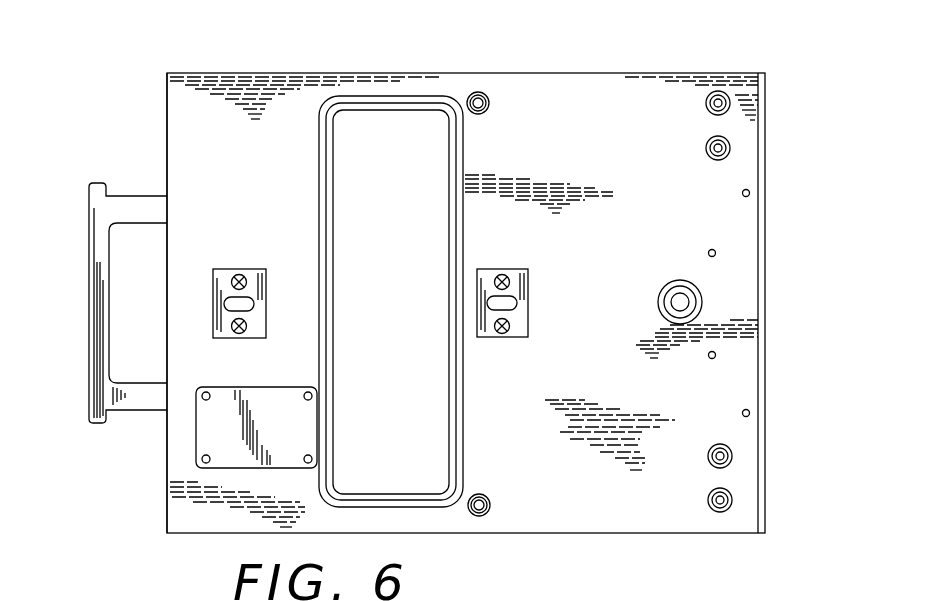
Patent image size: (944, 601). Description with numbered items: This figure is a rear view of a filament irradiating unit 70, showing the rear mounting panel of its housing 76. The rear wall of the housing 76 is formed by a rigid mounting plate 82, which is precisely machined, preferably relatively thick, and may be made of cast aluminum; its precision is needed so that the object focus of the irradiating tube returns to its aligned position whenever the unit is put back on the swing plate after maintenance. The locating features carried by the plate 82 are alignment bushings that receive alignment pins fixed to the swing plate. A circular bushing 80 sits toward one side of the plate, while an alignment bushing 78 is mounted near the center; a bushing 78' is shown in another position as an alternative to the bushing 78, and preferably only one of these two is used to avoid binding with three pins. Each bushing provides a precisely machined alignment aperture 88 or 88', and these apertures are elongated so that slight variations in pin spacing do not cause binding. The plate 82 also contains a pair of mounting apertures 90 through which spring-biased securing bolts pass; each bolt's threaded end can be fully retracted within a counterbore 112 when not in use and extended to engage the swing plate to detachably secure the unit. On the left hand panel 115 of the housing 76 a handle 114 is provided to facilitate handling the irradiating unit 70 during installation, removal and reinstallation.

The irradiating unit 70 is at (283, 66).
The irradiating unit housing 76 is at (587, 66).
The rigid mounting plate 82 is at (182, 145).
The alignment bushing 78 is at (239, 267).
The alignment bushing 78' is at (502, 277).
The alignment aperture 88 is at (266, 335).
The alignment aperture 88' is at (542, 292).
The mounting aperture 90 is at (490, 103).
The counterbore 112 is at (484, 113).
The alignment bushing 80 is at (658, 305).
The handle 114 is at (95, 424).
The left hand panel 115 is at (167, 457).